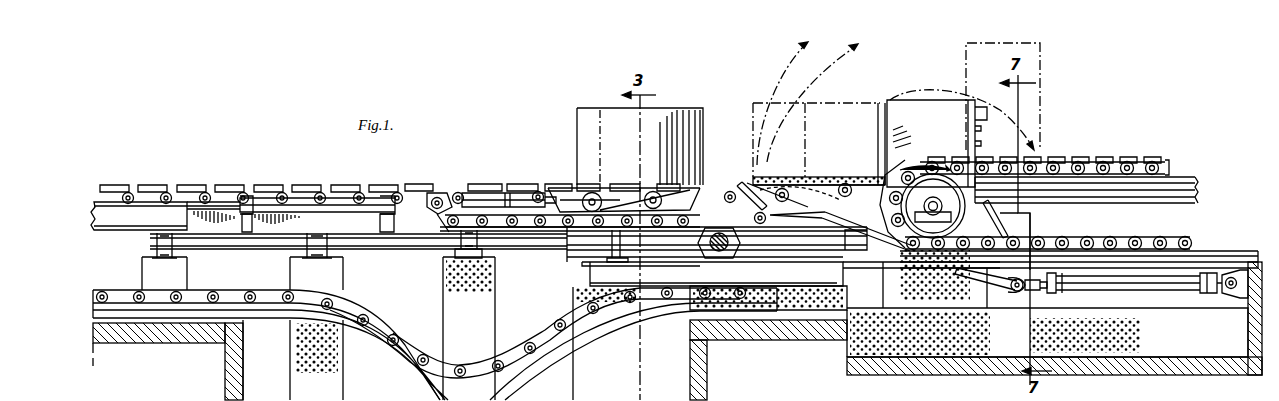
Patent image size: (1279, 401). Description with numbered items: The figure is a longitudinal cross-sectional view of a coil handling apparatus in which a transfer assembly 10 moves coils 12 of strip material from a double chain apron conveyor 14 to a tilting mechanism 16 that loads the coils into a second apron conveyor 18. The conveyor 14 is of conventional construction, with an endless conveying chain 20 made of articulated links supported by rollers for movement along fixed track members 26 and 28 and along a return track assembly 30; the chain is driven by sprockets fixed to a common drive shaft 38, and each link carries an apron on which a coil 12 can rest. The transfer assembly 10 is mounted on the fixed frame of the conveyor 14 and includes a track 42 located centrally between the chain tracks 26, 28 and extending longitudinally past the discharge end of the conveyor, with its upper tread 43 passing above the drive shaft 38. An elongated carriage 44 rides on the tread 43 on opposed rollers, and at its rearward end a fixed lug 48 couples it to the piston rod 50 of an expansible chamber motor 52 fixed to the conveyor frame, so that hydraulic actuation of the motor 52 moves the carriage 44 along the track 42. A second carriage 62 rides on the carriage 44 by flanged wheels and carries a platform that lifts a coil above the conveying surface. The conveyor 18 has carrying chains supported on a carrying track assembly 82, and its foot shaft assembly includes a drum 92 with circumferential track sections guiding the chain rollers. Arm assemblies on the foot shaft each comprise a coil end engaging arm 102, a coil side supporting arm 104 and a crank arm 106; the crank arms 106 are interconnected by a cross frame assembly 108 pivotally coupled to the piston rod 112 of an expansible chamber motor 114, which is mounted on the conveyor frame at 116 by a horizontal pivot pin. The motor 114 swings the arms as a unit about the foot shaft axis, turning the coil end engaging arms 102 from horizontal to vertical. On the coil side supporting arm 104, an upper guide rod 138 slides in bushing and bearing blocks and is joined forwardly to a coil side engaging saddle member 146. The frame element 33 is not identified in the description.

The transfer assembly 10 is at (507, 204).
The coils of strip material 12 is at (606, 108).
The double chain apron conveyor 14 is at (211, 184).
The tilting mechanism 16 is at (905, 108).
The second apron conveyor 18 is at (1137, 157).
The endless conveying chain 20 is at (380, 327).
The fixed track member 26 is at (224, 222).
The fixed track member 28 is at (122, 222).
The return track assembly 30 is at (575, 353).
The frame channel 33 is at (684, 272).
The drive shaft 38 is at (719, 253).
The track 42 is at (848, 240).
The tread 43 is at (562, 236).
The elongated carriage 44 is at (531, 232).
The fixed lug 48 is at (447, 194).
The piston rod 50 is at (413, 218).
The expansible chamber motor 52 is at (326, 198).
The second carriage 62 is at (625, 196).
The carrying track assembly 82 is at (1138, 190).
The drum 92 is at (970, 187).
The coil end engaging arm 102 is at (825, 180).
The coil side supporting arm 104 is at (936, 133).
The crank arm 106 is at (1026, 226).
The cross frame assembly 108 is at (972, 281).
The piston rod 112 is at (1035, 298).
The expansible chamber motor 114 is at (1138, 292).
The conveyor frame mounting 116 is at (1228, 300).
The upper guide rod 138 is at (981, 108).
The coil side engaging saddle member 146 is at (878, 108).